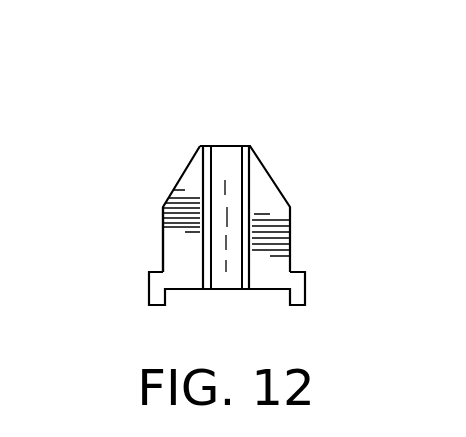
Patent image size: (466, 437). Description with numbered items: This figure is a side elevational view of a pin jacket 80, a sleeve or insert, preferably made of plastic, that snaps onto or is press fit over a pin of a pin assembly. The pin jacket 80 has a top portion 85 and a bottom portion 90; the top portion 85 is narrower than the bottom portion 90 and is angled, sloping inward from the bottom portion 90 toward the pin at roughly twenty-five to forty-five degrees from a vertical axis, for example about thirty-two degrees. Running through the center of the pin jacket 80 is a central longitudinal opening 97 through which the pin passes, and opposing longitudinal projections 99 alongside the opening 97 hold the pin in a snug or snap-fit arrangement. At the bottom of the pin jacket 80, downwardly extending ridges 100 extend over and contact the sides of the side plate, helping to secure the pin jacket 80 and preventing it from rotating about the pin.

The pin jacket 80 is at (292, 215).
The top portion 85 is at (185, 189).
The bottom portion 90 is at (163, 235).
The central longitudinal opening 97 is at (238, 147).
The longitudinal projections 99 is at (207, 147).
The ridges 100 is at (148, 298).